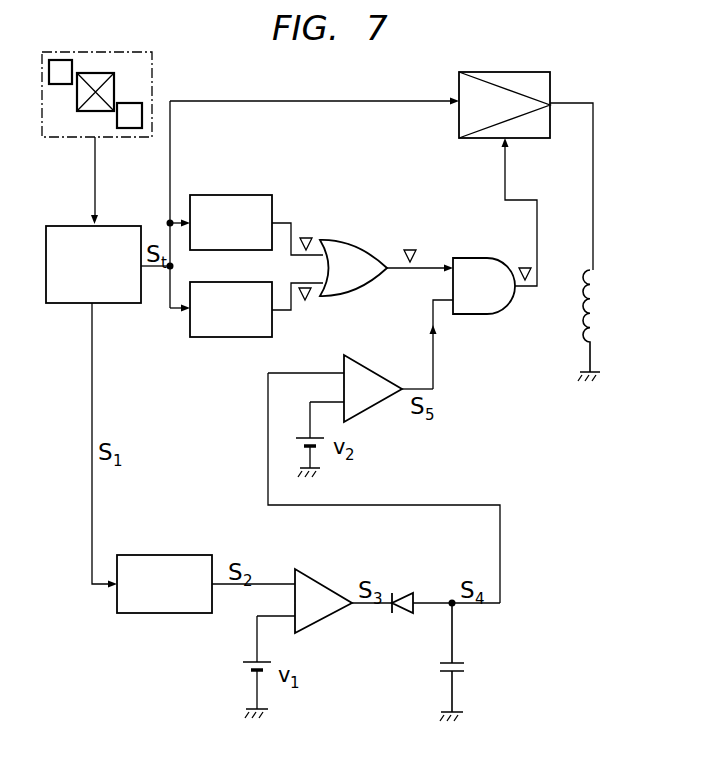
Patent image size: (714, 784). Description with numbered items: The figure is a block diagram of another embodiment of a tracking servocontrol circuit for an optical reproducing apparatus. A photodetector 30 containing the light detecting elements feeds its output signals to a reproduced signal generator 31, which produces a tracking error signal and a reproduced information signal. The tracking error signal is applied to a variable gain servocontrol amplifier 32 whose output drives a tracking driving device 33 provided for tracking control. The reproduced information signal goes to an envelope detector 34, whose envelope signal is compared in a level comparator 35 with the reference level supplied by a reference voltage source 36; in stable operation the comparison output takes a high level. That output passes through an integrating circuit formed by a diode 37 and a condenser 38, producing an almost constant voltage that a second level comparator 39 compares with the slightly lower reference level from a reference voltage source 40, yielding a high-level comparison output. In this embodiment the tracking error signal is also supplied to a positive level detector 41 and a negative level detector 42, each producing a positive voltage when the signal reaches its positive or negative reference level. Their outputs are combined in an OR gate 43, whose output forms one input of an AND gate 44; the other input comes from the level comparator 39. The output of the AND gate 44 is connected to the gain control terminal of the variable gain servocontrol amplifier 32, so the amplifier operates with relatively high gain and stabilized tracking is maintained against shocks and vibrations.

The photodetector 30 is at (152, 68).
The reproduced signal generator 31 is at (123, 226).
The variable gain servocontrol amplifier 32 is at (459, 89).
The tracking driving device 33 is at (582, 312).
The envelope detector 34 is at (160, 555).
The level comparator 35 is at (322, 626).
The reference voltage source 36 is at (243, 664).
The diode 37 is at (400, 618).
The condenser 38 is at (466, 667).
The level comparator 39 is at (376, 372).
The reference voltage source 40 is at (319, 447).
The positive level detector 41 is at (233, 195).
The negative level detector 42 is at (236, 338).
The OR gate 43 is at (349, 241).
The AND gate 44 is at (487, 258).